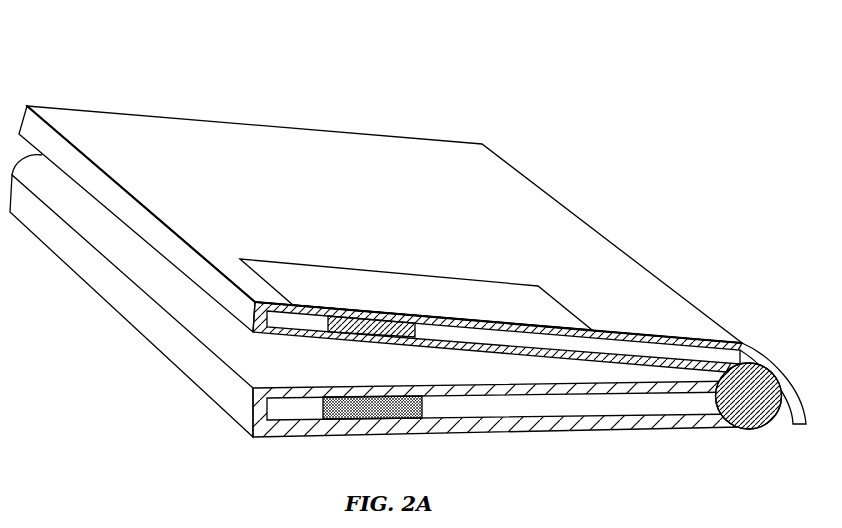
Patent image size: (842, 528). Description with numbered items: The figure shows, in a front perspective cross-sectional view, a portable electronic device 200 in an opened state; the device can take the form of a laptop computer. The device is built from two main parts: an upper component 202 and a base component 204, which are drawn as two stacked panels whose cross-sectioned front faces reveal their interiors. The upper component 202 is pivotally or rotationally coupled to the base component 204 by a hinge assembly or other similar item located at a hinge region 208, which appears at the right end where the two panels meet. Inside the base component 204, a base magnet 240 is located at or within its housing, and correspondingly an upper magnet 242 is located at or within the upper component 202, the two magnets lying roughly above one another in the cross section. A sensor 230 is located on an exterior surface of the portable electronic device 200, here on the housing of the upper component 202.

The portable electronic device 200 is at (408, 253).
The upper component 202 is at (380, 219).
The base component 204 is at (375, 313).
The hinge region 208 is at (745, 431).
The sensor 230 is at (385, 273).
The base magnet 240 is at (368, 422).
The upper magnet 242 is at (350, 336).